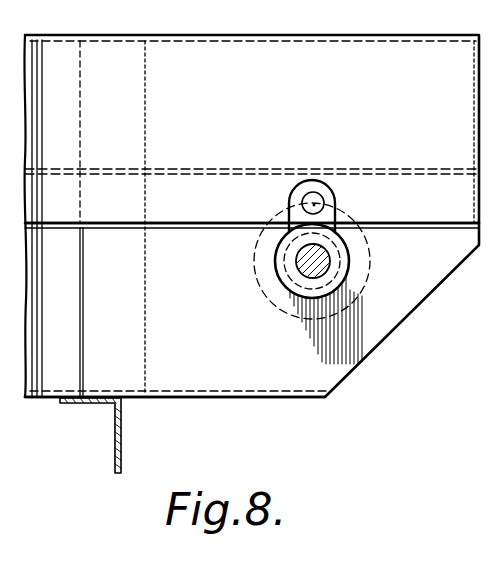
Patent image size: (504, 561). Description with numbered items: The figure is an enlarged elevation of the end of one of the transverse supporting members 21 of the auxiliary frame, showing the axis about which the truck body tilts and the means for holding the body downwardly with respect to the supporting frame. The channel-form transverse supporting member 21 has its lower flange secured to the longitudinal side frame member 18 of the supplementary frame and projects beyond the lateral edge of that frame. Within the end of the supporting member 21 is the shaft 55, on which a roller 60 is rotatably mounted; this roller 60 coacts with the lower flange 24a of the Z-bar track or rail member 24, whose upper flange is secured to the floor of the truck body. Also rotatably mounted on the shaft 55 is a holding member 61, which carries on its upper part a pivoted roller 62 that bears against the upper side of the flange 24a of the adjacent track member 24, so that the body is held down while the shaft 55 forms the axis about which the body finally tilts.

The track or rail member 24 is at (251, 216).
The lower flange 24a is at (184, 230).
The transverse supporting member 21 is at (177, 312).
The longitudinal side frame member 18 is at (114, 462).
The holding member 61 is at (333, 214).
The pivoted roller 62 is at (300, 210).
The roller 60 is at (270, 257).
The shaft 55 is at (322, 267).